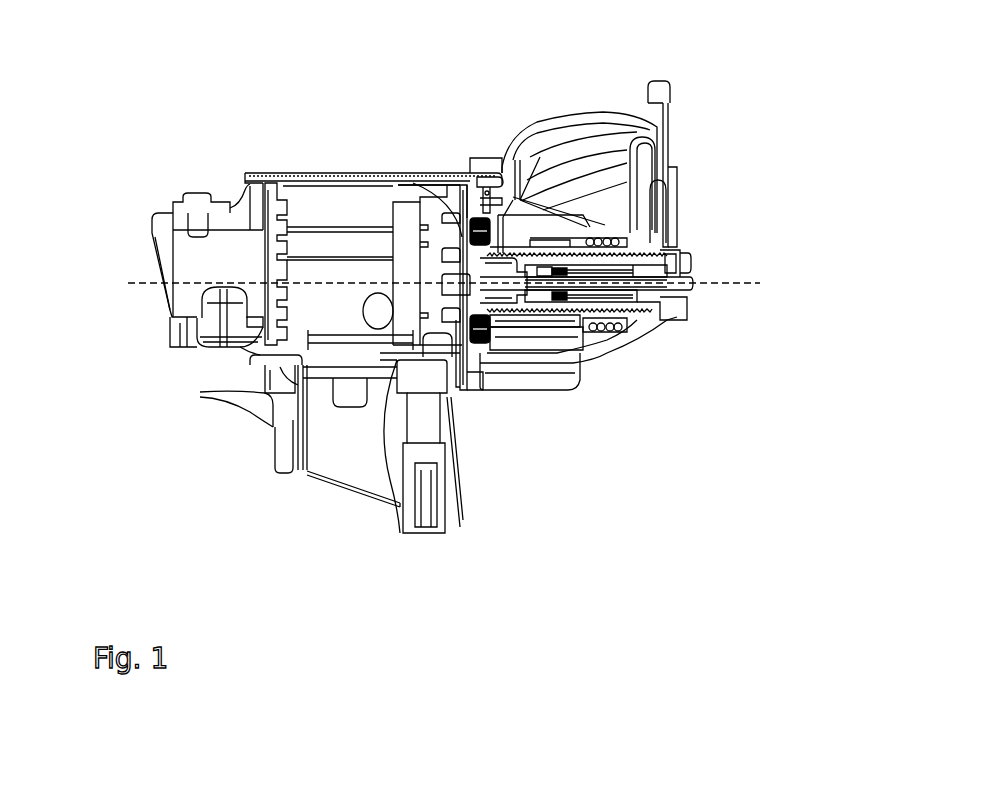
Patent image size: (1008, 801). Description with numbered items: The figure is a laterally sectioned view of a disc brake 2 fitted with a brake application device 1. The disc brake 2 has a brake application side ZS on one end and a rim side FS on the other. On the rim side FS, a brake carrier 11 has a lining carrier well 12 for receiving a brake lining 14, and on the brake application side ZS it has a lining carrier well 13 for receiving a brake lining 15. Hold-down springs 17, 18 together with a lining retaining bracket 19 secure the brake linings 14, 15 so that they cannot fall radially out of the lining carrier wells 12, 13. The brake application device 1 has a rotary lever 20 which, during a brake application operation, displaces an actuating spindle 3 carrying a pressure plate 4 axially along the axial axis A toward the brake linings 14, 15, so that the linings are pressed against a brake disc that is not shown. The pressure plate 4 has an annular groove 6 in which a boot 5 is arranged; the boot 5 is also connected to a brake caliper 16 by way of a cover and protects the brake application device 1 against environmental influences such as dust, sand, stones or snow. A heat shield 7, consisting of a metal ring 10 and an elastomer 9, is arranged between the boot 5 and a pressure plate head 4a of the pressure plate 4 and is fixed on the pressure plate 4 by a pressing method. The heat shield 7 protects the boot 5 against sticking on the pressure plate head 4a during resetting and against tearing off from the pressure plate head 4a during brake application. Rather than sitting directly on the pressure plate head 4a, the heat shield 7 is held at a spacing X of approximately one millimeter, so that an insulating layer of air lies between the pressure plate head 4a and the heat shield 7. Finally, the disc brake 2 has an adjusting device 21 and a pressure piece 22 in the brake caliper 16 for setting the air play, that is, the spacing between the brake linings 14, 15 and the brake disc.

The brake application device 1 is at (697, 302).
The disc brake 2 is at (316, 90).
The actuating spindle 3 is at (660, 318).
The pressure plate 4 is at (530, 302).
The pressure plate head 4a is at (473, 390).
The boot 5 is at (482, 215).
The annular groove 6 is at (497, 302).
The heat shield 7 is at (442, 215).
The elastomer 9 is at (457, 222).
The metal ring 10 is at (420, 208).
The brake carrier 11 is at (222, 392).
The lining carrier well 12 is at (322, 382).
The lining carrier well 13 is at (400, 503).
The brake lining 14 is at (263, 424).
The brake lining 15 is at (445, 385).
The brake caliper 16 is at (538, 124).
The hold-down spring 17 is at (263, 173).
The hold-down spring 18 is at (405, 198).
The lining retaining bracket 19 is at (313, 173).
The rotary lever 20 is at (675, 132).
The adjusting device 21 is at (605, 226).
The pressure piece 22 is at (565, 195).
The rim side FS is at (138, 256).
The brake application side ZS is at (805, 291).
The axial axis A is at (135, 283).
The spacing X is at (485, 378).